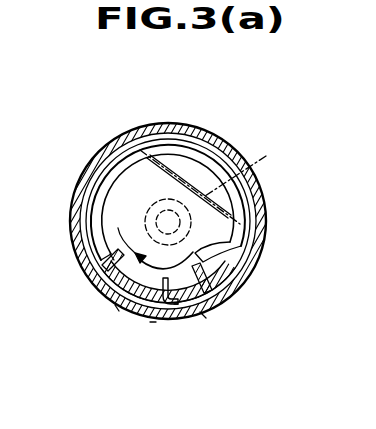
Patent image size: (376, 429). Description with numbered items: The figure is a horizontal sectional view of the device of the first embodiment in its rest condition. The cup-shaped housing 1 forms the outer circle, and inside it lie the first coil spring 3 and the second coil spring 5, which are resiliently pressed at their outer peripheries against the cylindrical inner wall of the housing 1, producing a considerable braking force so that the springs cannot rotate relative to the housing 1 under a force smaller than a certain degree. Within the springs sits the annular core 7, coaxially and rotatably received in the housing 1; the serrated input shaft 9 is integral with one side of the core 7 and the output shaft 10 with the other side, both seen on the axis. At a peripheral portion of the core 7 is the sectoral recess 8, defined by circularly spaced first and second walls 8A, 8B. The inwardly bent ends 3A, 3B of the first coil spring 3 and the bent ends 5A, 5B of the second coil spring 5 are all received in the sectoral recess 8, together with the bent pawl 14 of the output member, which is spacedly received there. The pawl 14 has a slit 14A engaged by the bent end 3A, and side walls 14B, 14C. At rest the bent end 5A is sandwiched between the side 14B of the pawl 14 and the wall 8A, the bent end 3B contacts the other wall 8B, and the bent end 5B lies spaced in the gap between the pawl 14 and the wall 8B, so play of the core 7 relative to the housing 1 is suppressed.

The cup-shaped housing 1 is at (192, 123).
The first coil spring 3 is at (193, 322).
The bent end of first coil spring 3A is at (153, 322).
The bent end of first coil spring 3B is at (112, 257).
The second coil spring 5 is at (255, 262).
The bent end of second coil spring 5A is at (222, 300).
The bent end of second coil spring 5B is at (118, 292).
The annular core 7 is at (230, 142).
The sectoral recess 8 is at (122, 178).
The first wall of sectoral recess 8A is at (197, 256).
The second wall of sectoral recess 8B is at (80, 213).
The serrated input shaft 9 is at (212, 197).
The output shaft 10 is at (232, 163).
The bent pawl 14 is at (139, 318).
The slit of pawl 14A is at (177, 325).
The side wall of pawl 14B is at (203, 315).
The side wall of pawl 14C is at (117, 308).